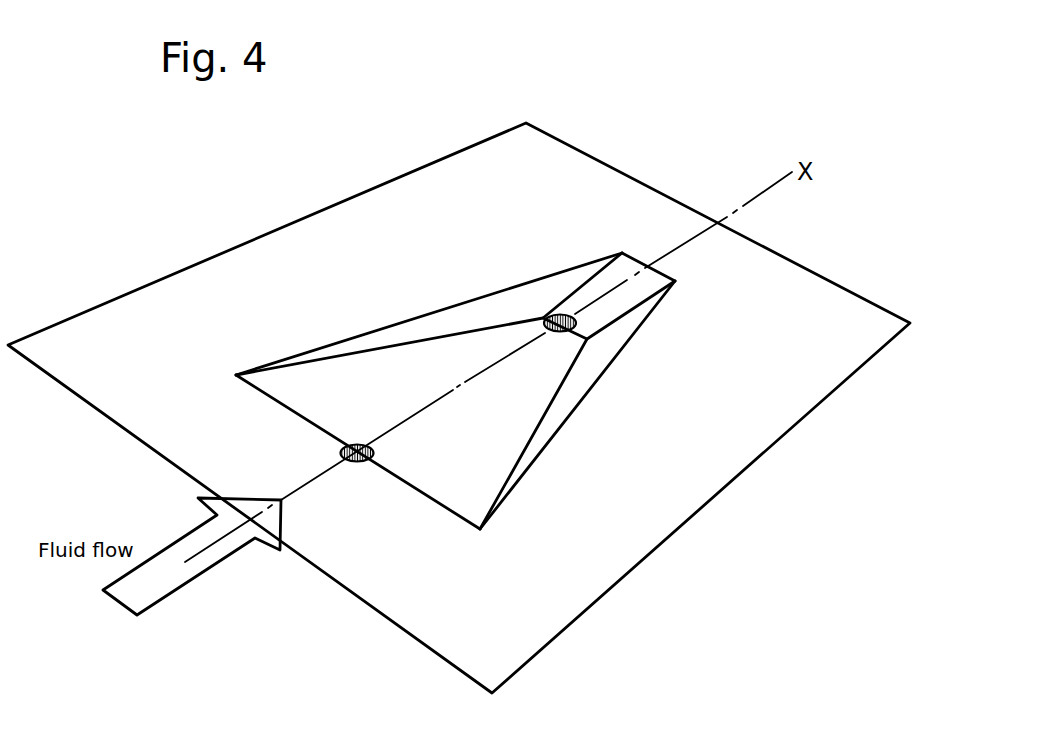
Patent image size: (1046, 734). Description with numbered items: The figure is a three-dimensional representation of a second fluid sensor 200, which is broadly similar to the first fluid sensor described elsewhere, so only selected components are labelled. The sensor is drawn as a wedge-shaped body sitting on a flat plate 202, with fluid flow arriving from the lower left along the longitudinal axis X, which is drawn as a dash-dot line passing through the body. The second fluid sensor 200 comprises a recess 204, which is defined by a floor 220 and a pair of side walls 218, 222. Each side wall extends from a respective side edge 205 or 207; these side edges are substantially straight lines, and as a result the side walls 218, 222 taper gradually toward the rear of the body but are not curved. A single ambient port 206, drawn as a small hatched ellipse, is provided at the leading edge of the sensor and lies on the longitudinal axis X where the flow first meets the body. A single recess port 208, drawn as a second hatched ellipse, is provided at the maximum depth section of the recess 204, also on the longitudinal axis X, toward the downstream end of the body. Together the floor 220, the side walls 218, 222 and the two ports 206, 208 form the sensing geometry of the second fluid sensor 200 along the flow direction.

The second fluid sensor 200 is at (646, 136).
The plate 202 is at (858, 336).
The recess 204 is at (346, 302).
The side edge 205 is at (420, 325).
The ambient port 206 is at (360, 462).
The side edge 207 is at (543, 453).
The recess port 208 is at (540, 317).
The side wall 218 is at (560, 280).
The floor 220 is at (457, 489).
The side wall 222 is at (570, 397).